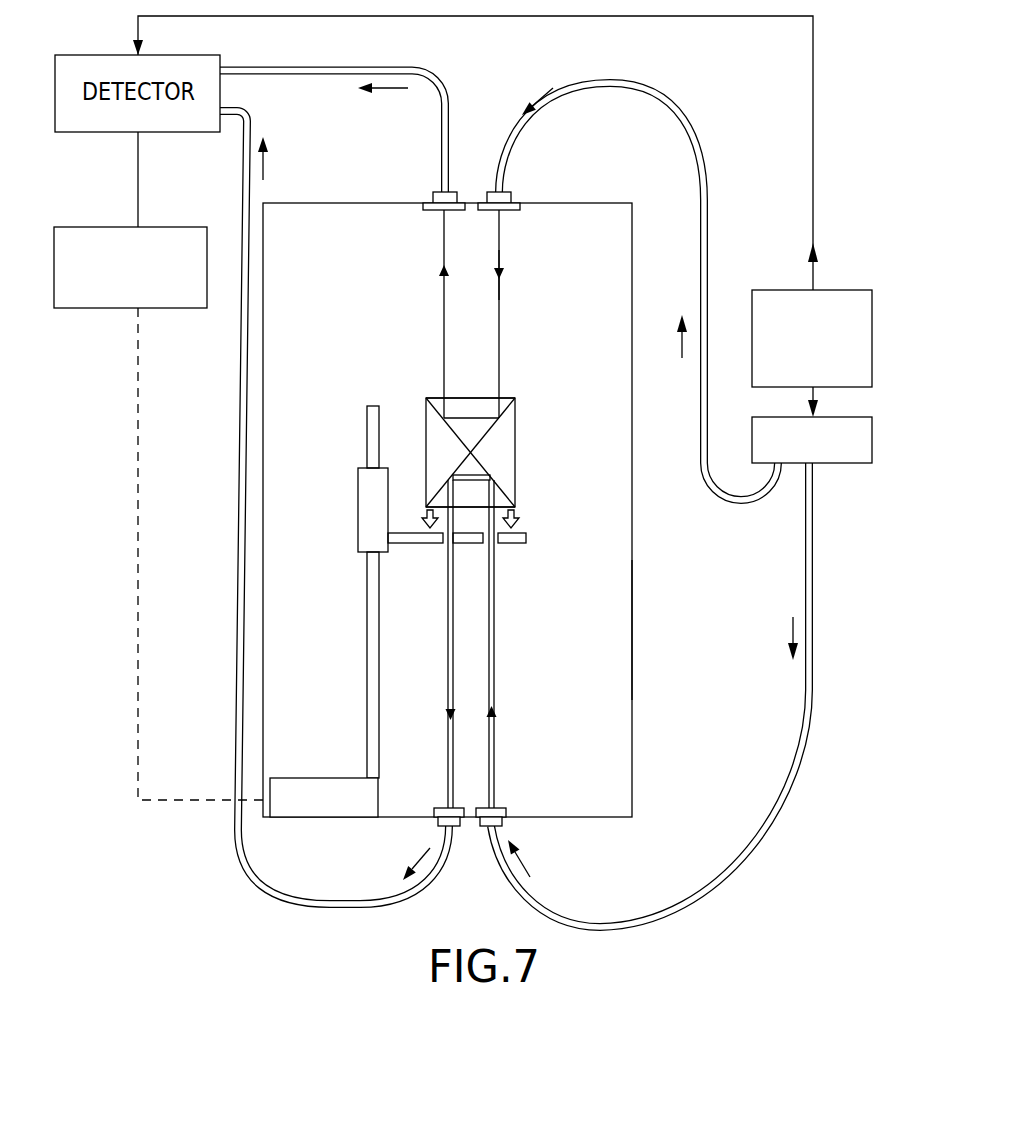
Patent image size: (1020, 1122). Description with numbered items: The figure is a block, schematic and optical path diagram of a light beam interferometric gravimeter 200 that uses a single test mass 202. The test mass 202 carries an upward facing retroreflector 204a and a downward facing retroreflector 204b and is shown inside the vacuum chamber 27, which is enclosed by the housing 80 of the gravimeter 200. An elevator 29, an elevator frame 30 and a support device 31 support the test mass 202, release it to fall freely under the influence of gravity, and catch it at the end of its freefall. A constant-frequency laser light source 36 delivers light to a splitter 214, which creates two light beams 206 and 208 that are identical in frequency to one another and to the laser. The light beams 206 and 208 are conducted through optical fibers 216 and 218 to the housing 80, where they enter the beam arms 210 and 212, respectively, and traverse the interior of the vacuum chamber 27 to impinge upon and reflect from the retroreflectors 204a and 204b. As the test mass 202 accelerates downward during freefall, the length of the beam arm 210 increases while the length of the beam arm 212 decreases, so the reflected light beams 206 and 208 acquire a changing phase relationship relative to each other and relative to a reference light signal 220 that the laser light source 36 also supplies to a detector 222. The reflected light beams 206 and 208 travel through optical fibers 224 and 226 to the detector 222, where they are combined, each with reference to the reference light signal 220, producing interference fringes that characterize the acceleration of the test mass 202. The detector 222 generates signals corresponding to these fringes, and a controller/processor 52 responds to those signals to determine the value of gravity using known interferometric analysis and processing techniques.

The light beam interferometric gravimeter 200 is at (205, 917).
The test mass 202 is at (530, 446).
The upward facing retroreflector 204a is at (512, 407).
The downward facing retroreflector 204b is at (512, 500).
The light beam 206 is at (500, 293).
The light beam 208 is at (495, 693).
The beam arm 210 is at (429, 335).
The beam arm 212 is at (437, 676).
The splitter 214 is at (853, 463).
The optical fiber 216 is at (690, 118).
The optical fiber 218 is at (717, 895).
The reference light signal 220 is at (813, 143).
The detector 222 is at (168, 133).
The optical fiber 224 is at (312, 76).
The optical fiber 226 is at (237, 562).
The vacuum chamber 27 is at (343, 293).
The elevator 29 is at (322, 778).
The elevator frame 30 is at (365, 527).
The support device 31 is at (415, 543).
The laser light source 36 is at (860, 290).
The controller/processor 52 is at (170, 310).
The housing 80 is at (632, 622).